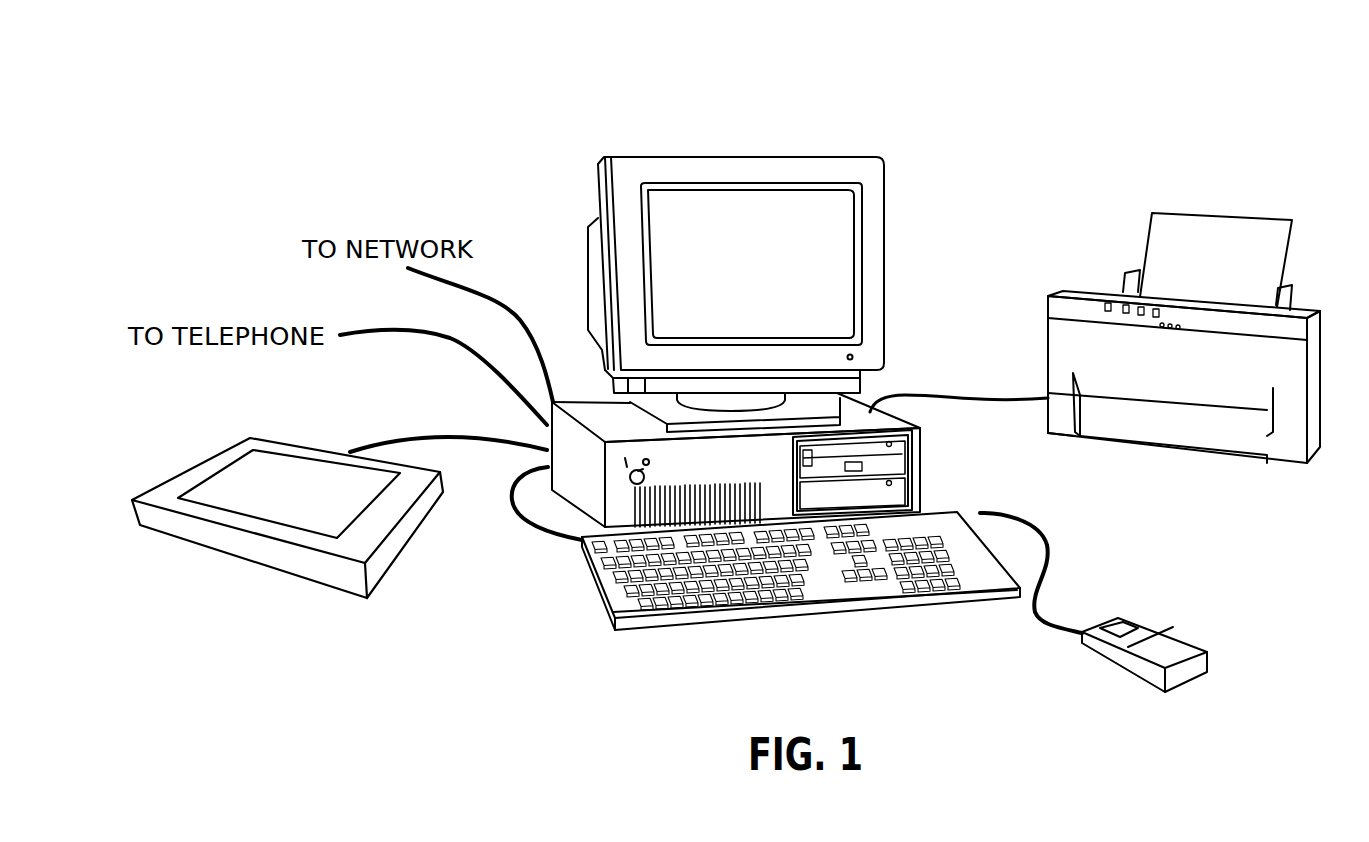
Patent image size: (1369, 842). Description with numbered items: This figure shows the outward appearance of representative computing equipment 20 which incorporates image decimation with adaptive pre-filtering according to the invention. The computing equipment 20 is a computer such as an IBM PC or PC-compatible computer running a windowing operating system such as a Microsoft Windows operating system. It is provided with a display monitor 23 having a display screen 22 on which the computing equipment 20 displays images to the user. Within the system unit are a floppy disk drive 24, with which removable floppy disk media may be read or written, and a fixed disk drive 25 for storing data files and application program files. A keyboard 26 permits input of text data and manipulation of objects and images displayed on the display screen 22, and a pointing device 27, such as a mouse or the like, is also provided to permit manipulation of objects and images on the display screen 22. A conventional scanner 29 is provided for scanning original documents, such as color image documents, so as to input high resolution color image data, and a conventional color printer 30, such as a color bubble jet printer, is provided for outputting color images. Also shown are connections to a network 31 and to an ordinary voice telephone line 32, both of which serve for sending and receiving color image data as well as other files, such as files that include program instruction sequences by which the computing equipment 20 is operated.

The computing equipment 20 is at (985, 232).
The display screen 22 is at (826, 284).
The display monitor 23 is at (765, 269).
The floppy disk drive 24 is at (890, 466).
The fixed disk drive 25 is at (878, 490).
The keyboard 26 is at (680, 605).
The pointing device 27 is at (1183, 685).
The scanner 29 is at (402, 528).
The color printer 30 is at (1089, 292).
The network 31 is at (515, 315).
The voice telephone line 32 is at (418, 336).